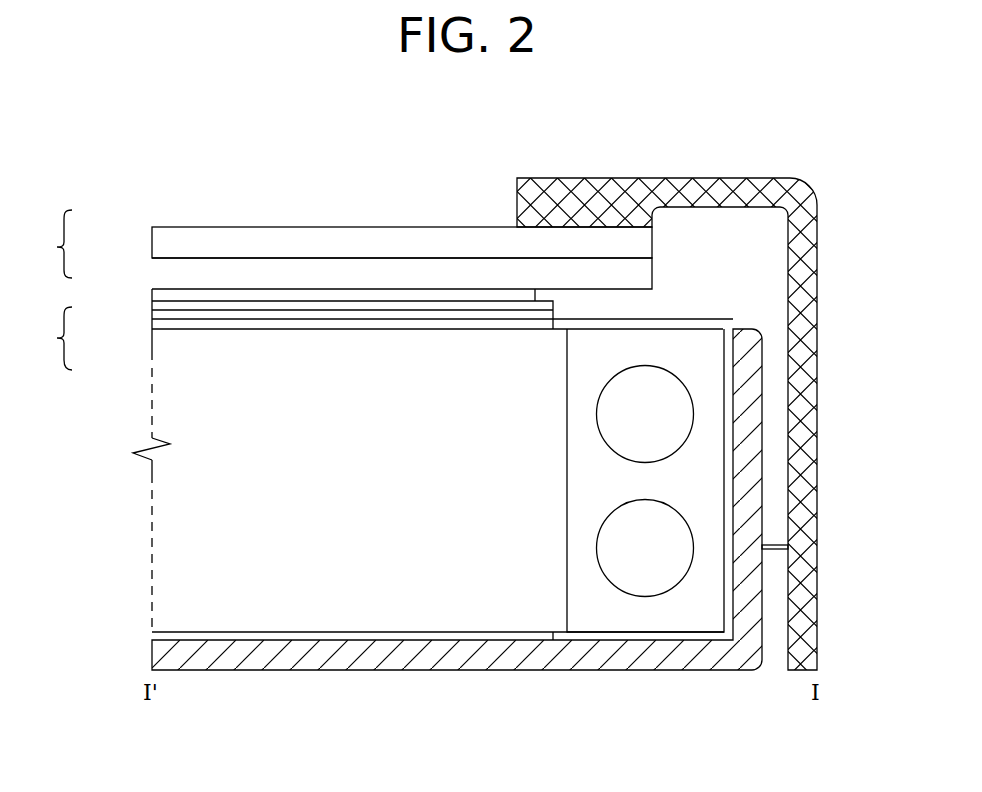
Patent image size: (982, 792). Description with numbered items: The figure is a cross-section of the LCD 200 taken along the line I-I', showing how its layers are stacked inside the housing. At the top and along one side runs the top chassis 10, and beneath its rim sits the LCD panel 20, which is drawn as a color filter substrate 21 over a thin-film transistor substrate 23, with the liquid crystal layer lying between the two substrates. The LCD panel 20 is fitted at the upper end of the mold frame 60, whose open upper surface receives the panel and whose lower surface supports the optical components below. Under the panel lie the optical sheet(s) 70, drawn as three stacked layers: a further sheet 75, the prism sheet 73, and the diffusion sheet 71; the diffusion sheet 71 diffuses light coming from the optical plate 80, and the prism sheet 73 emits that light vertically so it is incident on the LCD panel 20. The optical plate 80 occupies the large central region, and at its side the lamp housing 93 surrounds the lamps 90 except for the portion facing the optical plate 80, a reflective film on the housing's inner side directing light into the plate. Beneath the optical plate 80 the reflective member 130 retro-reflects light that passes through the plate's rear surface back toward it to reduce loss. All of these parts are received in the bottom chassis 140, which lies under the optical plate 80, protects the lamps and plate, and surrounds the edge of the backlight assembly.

The LCD 200 is at (230, 148).
The top chassis 10 is at (810, 628).
The mold frame 60 is at (780, 258).
The LCD panel 20 is at (48, 244).
The color filter substrate 21 is at (165, 245).
The thin-film transistor substrate 23 is at (152, 283).
The optical sheet(s) 70 is at (48, 338).
The optical sheet 75 is at (152, 305).
The prism sheet 73 is at (152, 316).
The diffusion sheet 71 is at (152, 325).
The optical plate 80 is at (170, 490).
The lamps 90 is at (675, 567).
The lamp housing 93 is at (730, 445).
The reflective member 130 is at (152, 637).
The bottom chassis 140 is at (152, 660).